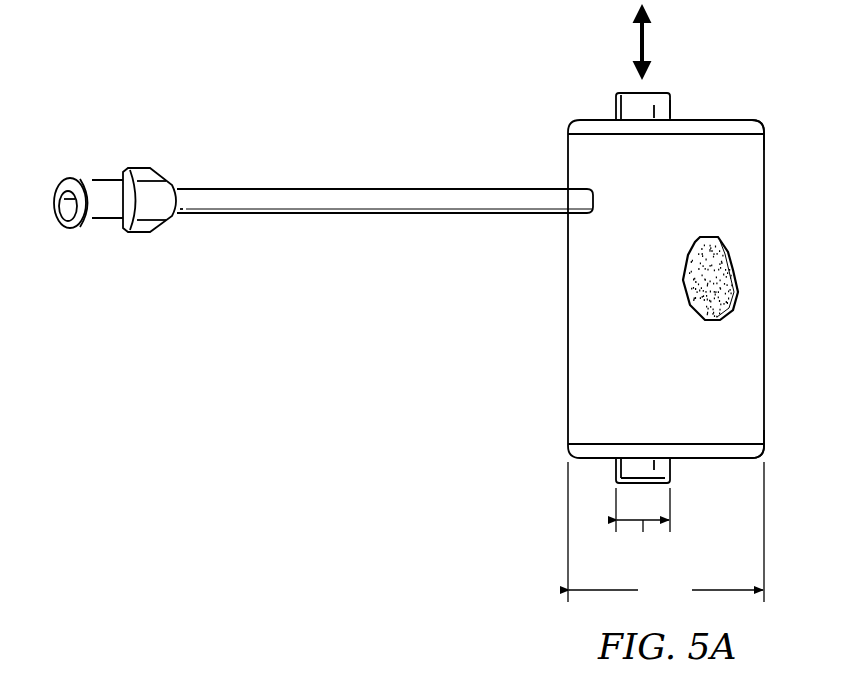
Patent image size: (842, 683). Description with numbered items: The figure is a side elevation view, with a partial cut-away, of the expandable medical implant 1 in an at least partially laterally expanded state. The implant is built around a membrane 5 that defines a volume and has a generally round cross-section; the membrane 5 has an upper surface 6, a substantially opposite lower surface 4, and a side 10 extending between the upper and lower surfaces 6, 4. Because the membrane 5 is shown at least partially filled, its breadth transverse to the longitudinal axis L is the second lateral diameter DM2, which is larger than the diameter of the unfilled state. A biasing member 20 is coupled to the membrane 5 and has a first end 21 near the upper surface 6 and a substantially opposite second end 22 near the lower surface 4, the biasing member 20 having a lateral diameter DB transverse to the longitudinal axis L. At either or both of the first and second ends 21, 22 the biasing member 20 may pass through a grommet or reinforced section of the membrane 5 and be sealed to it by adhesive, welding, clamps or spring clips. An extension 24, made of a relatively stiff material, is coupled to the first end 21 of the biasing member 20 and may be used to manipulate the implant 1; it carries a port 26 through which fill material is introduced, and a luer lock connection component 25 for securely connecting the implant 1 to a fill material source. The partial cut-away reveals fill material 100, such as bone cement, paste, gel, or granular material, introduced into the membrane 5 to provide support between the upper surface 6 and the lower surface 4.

The expandable medical implant 1 is at (299, 80).
The lower surface 4 is at (738, 460).
The membrane 5 is at (767, 254).
The upper surface 6 is at (748, 122).
The side 10 is at (568, 272).
The biasing member 20 is at (615, 108).
The first end 21 is at (672, 110).
The second end 22 is at (672, 468).
The extension 24 is at (290, 188).
The luer lock connection component 25 is at (100, 181).
The port 26 is at (63, 207).
The fill material 100 is at (685, 272).
The longitudinal axis L is at (648, 42).
The lateral diameter of the biasing member DB is at (643, 525).
The second lateral diameter DM2 is at (666, 532).